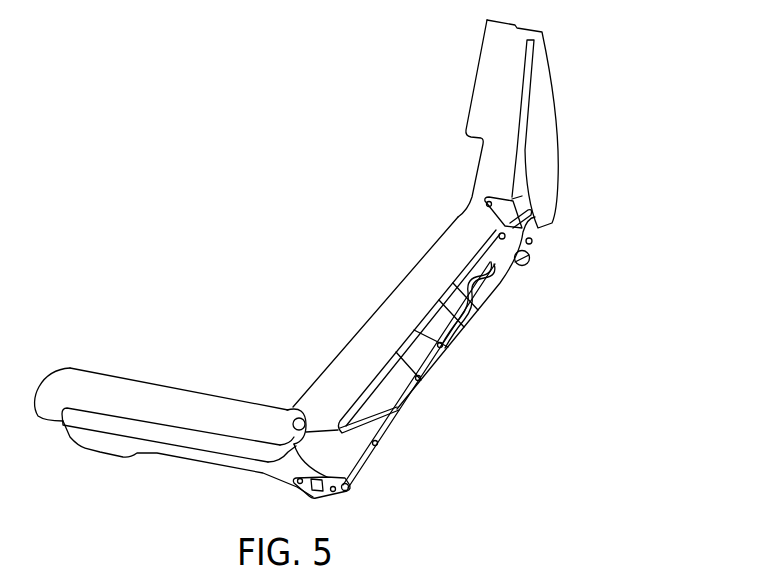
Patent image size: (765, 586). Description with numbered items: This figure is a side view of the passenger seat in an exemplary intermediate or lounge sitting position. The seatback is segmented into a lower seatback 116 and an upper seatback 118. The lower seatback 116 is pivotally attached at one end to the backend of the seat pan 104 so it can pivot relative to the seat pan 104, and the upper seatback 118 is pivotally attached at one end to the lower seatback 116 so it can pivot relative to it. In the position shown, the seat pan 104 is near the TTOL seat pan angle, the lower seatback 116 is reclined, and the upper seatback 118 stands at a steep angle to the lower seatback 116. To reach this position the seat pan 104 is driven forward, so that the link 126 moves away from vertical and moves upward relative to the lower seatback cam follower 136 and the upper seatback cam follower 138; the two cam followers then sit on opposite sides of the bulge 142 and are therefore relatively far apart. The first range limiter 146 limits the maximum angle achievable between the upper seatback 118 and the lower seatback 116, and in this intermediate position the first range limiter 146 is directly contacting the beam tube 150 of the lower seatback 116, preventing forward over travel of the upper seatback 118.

The seat pan 104 is at (177, 388).
The lower seatback 116 is at (383, 302).
The upper seatback 118 is at (483, 143).
The link 126 is at (487, 300).
The lower seatback cam follower 136 is at (499, 236).
The upper seatback cam follower 138 is at (532, 242).
The bulge 142 is at (476, 215).
The first range limiter 146 is at (478, 250).
The beam tube 150 is at (530, 262).